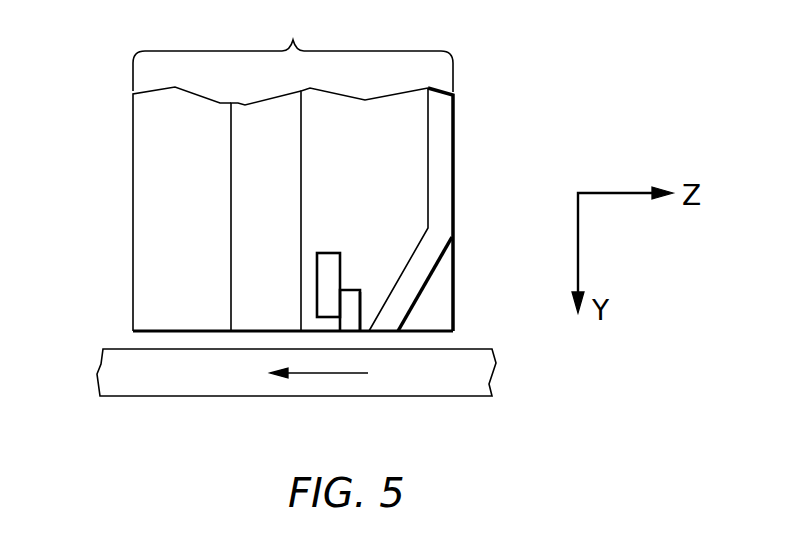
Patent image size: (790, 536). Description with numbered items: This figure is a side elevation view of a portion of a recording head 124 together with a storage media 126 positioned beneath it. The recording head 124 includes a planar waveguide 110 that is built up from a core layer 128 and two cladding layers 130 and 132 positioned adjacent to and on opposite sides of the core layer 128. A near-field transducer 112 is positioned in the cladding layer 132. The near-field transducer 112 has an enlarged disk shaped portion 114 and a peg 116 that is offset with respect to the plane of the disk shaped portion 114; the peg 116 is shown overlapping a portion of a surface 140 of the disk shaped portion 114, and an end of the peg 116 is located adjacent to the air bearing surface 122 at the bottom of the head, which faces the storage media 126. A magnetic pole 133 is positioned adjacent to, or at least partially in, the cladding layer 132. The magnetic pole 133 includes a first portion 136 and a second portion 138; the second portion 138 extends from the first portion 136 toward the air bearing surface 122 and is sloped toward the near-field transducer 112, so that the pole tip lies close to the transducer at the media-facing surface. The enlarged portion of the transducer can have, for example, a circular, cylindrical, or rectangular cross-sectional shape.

The waveguide 110 is at (293, 49).
The near-field transducer 112 is at (358, 234).
The disk shaped portion 114 is at (330, 262).
The peg 116 is at (350, 296).
The air bearing surface 122 is at (148, 333).
The recording head 124 is at (512, 124).
The storage media 126 is at (160, 385).
The core layer 128 is at (262, 113).
The cladding layer 130 is at (148, 133).
The cladding layer 132 is at (349, 110).
The magnetic pole 133 is at (443, 156).
The first portion 136 is at (443, 200).
The second portion 138 is at (410, 285).
The surface 140 is at (377, 289).